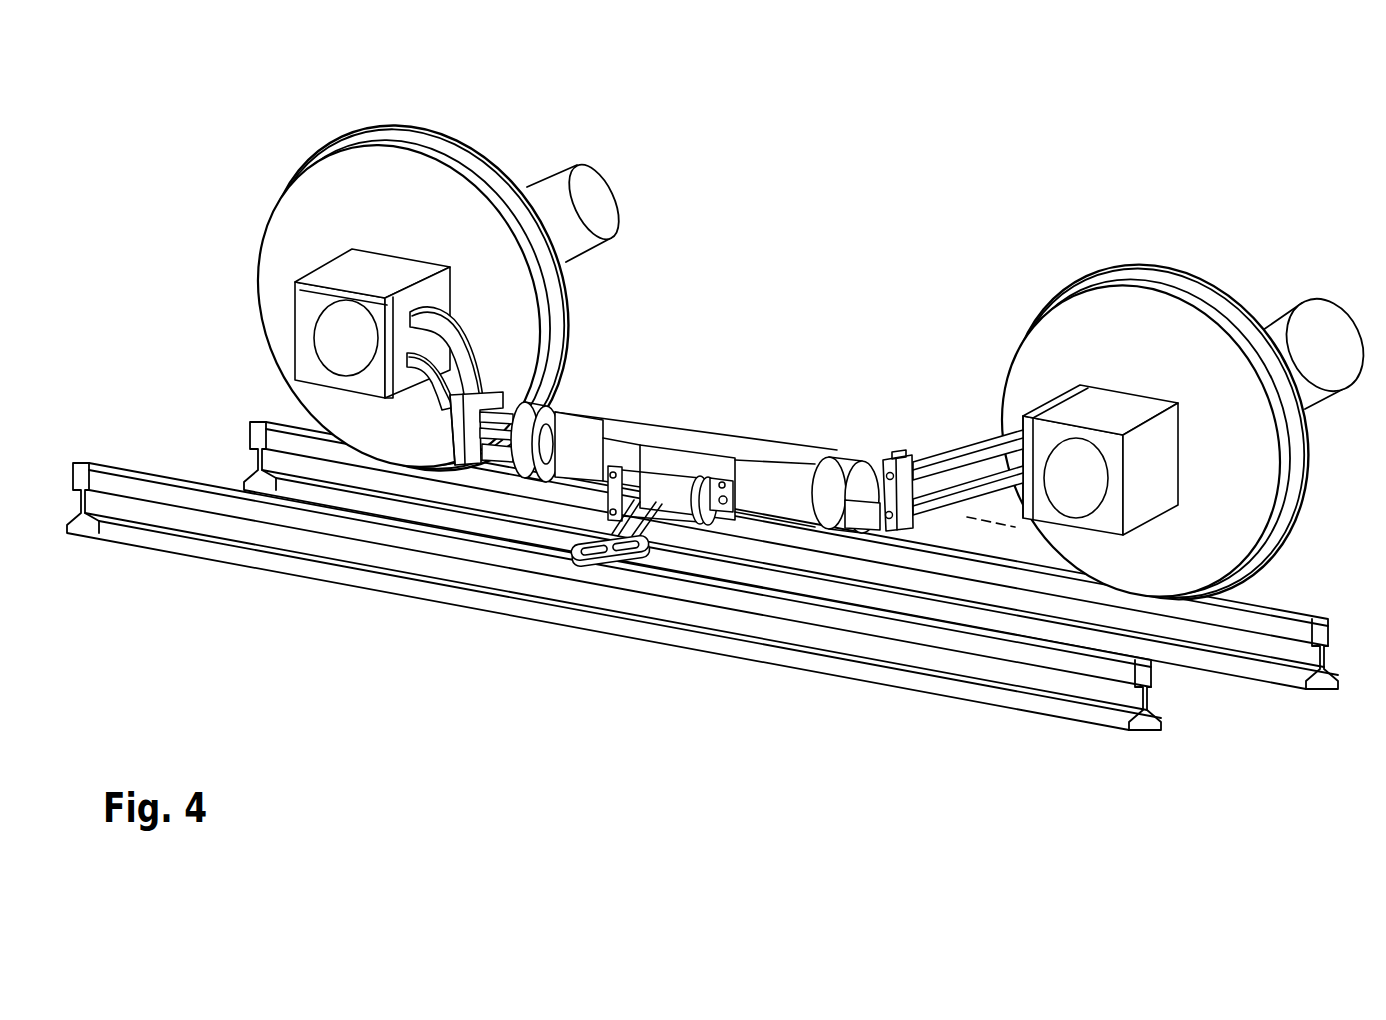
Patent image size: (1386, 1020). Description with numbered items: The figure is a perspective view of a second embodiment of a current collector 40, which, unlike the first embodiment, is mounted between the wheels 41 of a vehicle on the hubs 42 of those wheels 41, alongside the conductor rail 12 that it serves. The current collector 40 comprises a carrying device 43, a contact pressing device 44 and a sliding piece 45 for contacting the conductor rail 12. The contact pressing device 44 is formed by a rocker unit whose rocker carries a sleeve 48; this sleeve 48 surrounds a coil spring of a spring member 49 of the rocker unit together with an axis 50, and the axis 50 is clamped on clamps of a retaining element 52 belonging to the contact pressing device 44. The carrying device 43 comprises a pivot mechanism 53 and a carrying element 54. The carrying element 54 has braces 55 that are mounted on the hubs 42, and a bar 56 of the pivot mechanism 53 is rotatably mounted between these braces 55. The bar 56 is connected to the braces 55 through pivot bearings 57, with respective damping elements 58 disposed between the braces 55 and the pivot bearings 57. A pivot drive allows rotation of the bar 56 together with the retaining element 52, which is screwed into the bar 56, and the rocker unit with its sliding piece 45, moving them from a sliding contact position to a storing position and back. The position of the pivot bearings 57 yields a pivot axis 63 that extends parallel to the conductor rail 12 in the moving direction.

The conductor rail 12 is at (1107, 718).
The current collector 40 is at (857, 278).
The wheels 41 is at (442, 142).
The hubs 42 is at (296, 253).
The carrying device 43 is at (943, 371).
The contact pressing device 44 is at (695, 441).
The sliding piece 45 is at (590, 548).
The sleeve 48 is at (550, 417).
The spring member 49 is at (669, 450).
The axis 50 is at (693, 505).
The retaining element 52 is at (725, 458).
The pivot mechanism 53 is at (867, 443).
The carrying element 54 is at (964, 447).
The braces 55 is at (457, 352).
The bar 56 is at (773, 497).
The pivot bearings 57 is at (487, 397).
The damping elements 58 is at (493, 405).
The pivot axis 63 is at (967, 517).